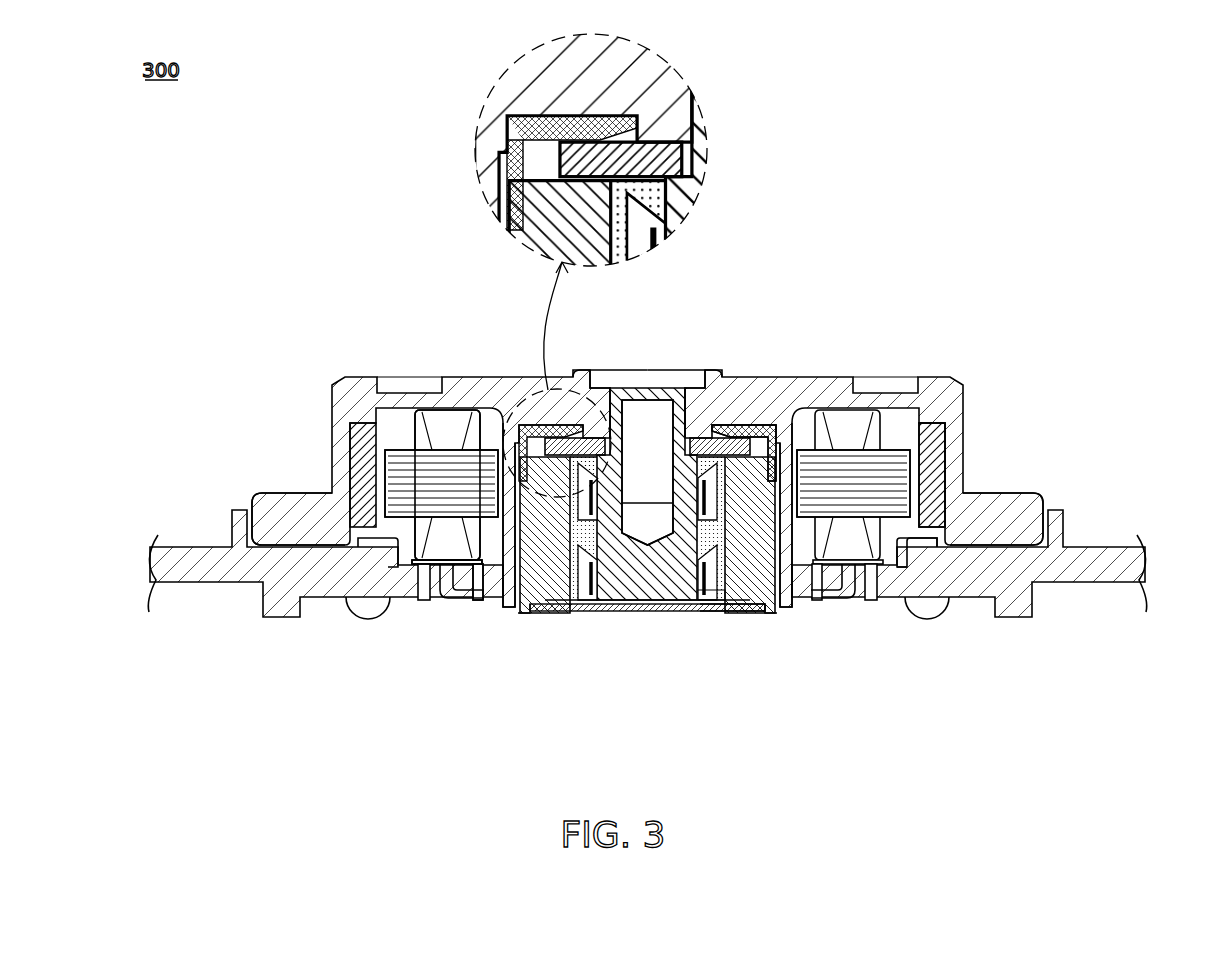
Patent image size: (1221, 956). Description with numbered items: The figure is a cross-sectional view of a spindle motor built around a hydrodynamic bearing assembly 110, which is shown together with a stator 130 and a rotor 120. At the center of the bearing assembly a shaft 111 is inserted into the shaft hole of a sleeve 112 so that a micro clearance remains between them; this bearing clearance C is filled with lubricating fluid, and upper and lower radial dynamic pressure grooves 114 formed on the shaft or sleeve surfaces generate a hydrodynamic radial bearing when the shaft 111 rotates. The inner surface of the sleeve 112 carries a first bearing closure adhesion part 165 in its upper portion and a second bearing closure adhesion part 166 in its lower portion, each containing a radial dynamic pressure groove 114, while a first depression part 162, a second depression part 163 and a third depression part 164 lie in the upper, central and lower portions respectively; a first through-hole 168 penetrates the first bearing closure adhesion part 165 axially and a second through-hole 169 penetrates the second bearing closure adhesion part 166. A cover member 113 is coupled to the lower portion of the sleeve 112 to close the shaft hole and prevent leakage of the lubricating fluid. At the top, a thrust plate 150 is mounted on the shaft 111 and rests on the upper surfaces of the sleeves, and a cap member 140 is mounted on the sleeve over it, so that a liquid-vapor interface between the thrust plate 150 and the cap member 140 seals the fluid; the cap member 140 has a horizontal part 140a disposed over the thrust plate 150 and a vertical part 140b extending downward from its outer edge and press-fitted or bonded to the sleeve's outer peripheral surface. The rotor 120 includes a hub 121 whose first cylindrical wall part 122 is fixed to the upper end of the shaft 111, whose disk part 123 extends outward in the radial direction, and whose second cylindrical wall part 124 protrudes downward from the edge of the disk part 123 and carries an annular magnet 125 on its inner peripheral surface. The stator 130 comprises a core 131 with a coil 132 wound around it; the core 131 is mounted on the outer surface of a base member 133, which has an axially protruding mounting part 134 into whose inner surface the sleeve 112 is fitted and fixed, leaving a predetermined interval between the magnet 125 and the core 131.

The hydrodynamic bearing assembly 110 is at (547, 717).
The shaft 111 is at (625, 613).
The sleeve 112 is at (568, 614).
The cover member 113 is at (668, 613).
The radial dynamic pressure groove 114 is at (577, 599).
The rotor 120 is at (986, 370).
The hub 121 is at (307, 290).
The first cylindrical wall part 122 is at (522, 425).
The disk part 123 is at (363, 470).
The second cylindrical wall part 124 is at (332, 468).
The magnet 125 is at (937, 452).
The stator 130 is at (492, 700).
The core 131 is at (405, 498).
The coil 132 is at (437, 522).
The base member 133 is at (483, 592).
The mounting part 134 is at (765, 605).
The cap member 140 is at (752, 426).
The horizontal part 140a is at (575, 120).
The vertical part 140b is at (500, 185).
The thrust plate 150 is at (597, 442).
The first depression part 162 is at (697, 458).
The second depression part 163 is at (665, 480).
The third depression part 164 is at (700, 612).
The first bearing closure adhesion part 165 is at (778, 560).
The second bearing closure adhesion part 166 is at (745, 613).
The first through-hole 168 is at (776, 443).
The second through-hole 169 is at (722, 613).
The bearing clearance C is at (583, 602).